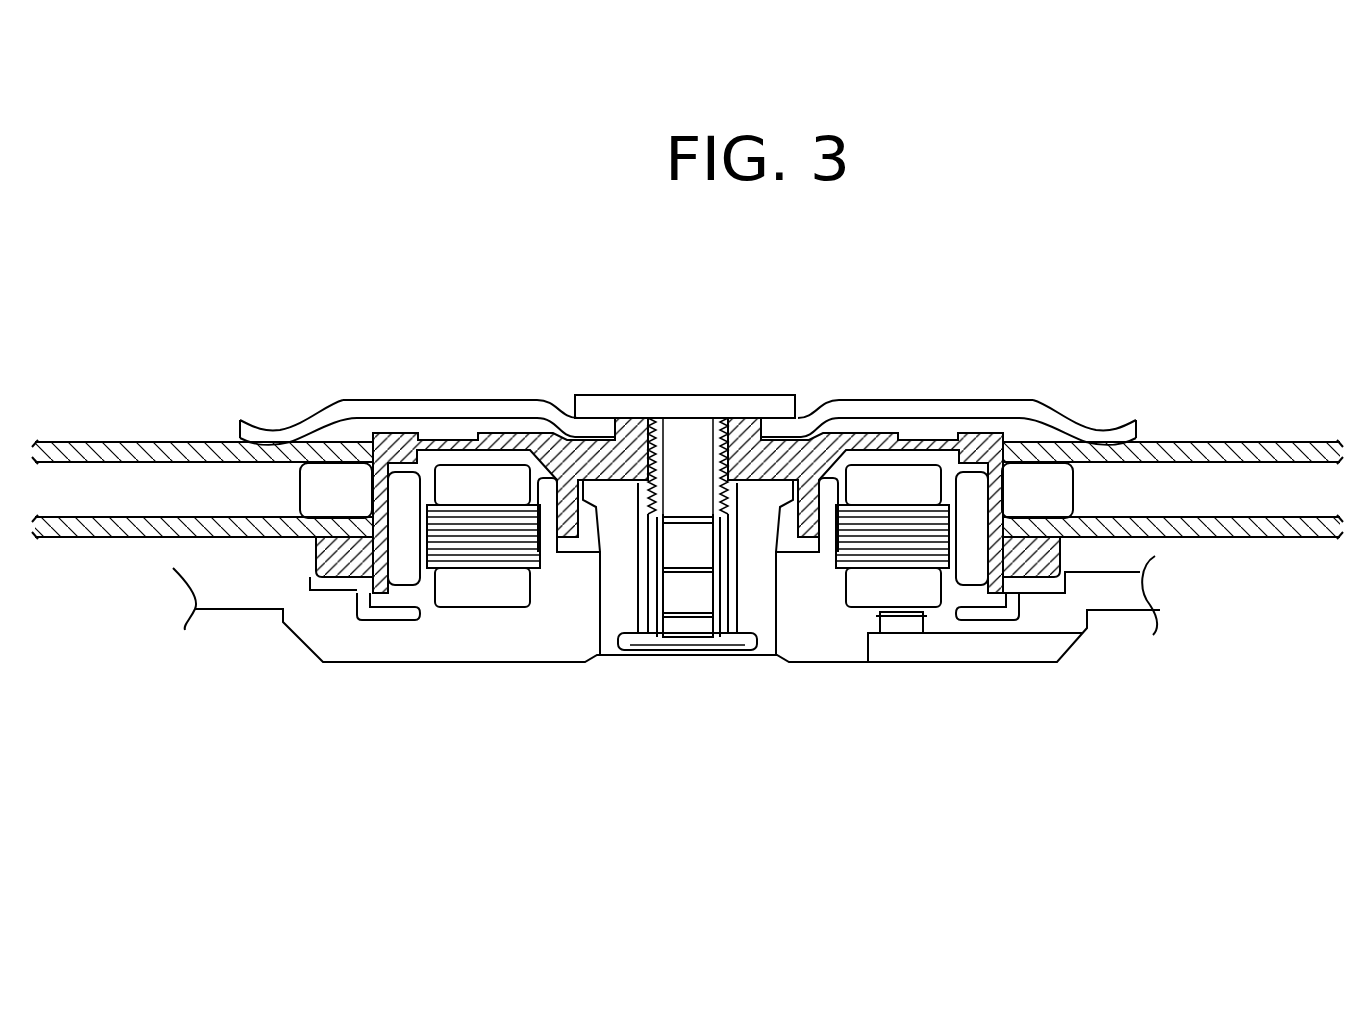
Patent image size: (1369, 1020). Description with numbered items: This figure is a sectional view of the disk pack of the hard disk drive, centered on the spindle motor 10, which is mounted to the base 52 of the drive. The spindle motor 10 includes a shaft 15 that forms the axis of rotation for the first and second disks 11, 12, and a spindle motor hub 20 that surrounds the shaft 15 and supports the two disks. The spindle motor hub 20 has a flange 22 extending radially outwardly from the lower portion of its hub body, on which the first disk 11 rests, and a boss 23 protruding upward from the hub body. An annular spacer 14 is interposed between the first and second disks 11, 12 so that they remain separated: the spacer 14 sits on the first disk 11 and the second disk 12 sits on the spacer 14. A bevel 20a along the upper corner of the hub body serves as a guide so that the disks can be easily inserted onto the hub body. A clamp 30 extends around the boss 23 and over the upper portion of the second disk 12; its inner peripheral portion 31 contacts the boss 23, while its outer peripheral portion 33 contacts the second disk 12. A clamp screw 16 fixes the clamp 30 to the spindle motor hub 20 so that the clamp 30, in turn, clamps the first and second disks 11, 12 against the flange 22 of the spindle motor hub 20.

The spindle motor 10 is at (430, 622).
The first disk 11 is at (1290, 528).
The second disk 12 is at (1247, 445).
The spacer 14 is at (1034, 447).
The shaft 15 is at (692, 593).
The clamp screw 16 is at (685, 407).
The spindle motor hub 20 is at (853, 425).
The bevel 20a is at (968, 508).
The flange 22 is at (350, 573).
The boss 23 is at (745, 420).
The clamp 30 is at (945, 386).
The inner peripheral portion 31 is at (600, 430).
The outer peripheral portion 33 is at (278, 433).
The base 52 is at (250, 593).